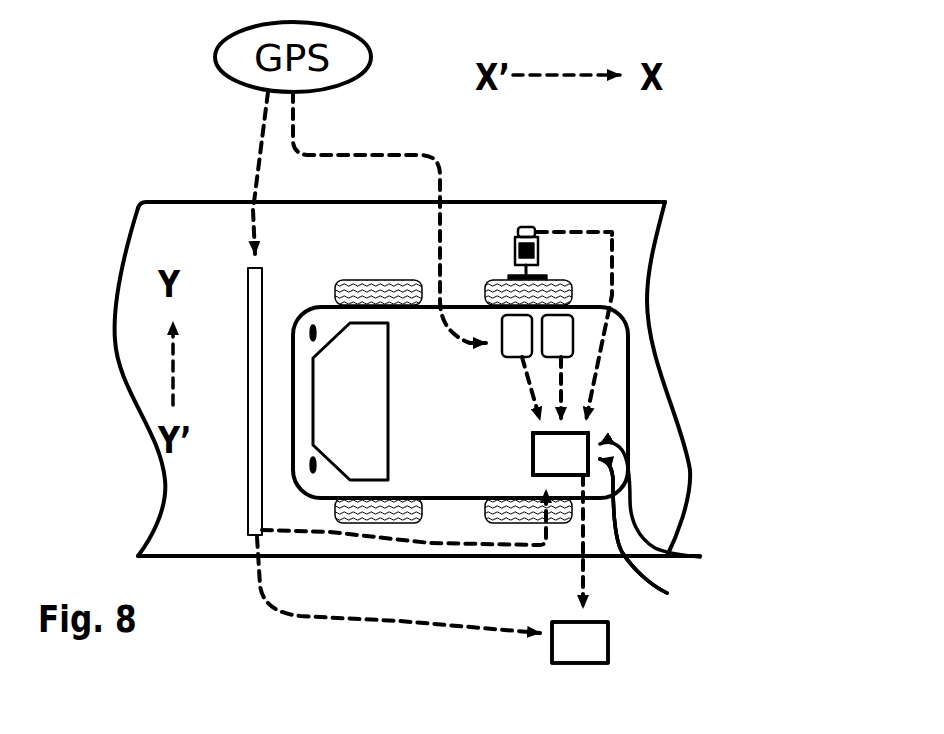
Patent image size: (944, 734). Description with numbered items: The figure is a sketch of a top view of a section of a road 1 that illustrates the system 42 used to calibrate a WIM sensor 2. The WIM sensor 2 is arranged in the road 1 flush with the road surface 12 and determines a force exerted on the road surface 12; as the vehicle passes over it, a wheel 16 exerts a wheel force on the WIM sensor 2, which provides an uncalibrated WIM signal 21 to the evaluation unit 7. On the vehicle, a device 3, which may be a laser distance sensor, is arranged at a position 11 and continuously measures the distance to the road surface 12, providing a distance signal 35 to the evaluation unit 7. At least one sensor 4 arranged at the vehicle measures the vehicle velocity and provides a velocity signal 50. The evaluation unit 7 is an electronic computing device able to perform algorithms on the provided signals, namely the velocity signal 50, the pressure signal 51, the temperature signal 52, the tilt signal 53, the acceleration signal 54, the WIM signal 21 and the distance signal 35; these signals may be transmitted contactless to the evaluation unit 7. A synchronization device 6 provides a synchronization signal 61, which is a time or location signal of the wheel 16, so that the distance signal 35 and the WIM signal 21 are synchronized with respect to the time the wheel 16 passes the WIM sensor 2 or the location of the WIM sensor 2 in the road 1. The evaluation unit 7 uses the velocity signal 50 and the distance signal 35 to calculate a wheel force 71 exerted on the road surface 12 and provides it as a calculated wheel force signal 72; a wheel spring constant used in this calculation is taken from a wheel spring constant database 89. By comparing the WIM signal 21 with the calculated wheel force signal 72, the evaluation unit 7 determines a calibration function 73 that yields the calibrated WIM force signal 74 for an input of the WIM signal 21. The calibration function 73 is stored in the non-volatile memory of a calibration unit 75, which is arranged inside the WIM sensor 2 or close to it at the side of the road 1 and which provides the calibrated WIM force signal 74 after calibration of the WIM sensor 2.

The road 1 is at (95, 219).
The system 42 is at (172, 186).
The road surface 12 is at (190, 552).
The WIM sensor 2 is at (252, 300).
The synchronization signal 61 is at (250, 162).
The evaluation unit 7 is at (532, 470).
The synchronization device 6 is at (510, 348).
The sensor 4 is at (561, 327).
The device 3 is at (526, 225).
The position 11 is at (504, 236).
The wheel 16 is at (578, 226).
The distance signal 35 is at (618, 252).
The velocity signal 50 is at (567, 400).
The pressure signal 51 is at (560, 454).
The temperature signal 52 is at (560, 454).
The tilt signal 53 is at (560, 454).
The acceleration signal 54 is at (560, 454).
The wheel spring constant database 89 is at (672, 513).
The calculated wheel force 71 is at (693, 547).
The calculated wheel force signal 72 is at (633, 526).
The calibration function 73 is at (580, 583).
The WIM signal 21 is at (318, 536).
The calibration unit 75 is at (608, 647).
The calibrated WIM force signal 74 is at (557, 658).